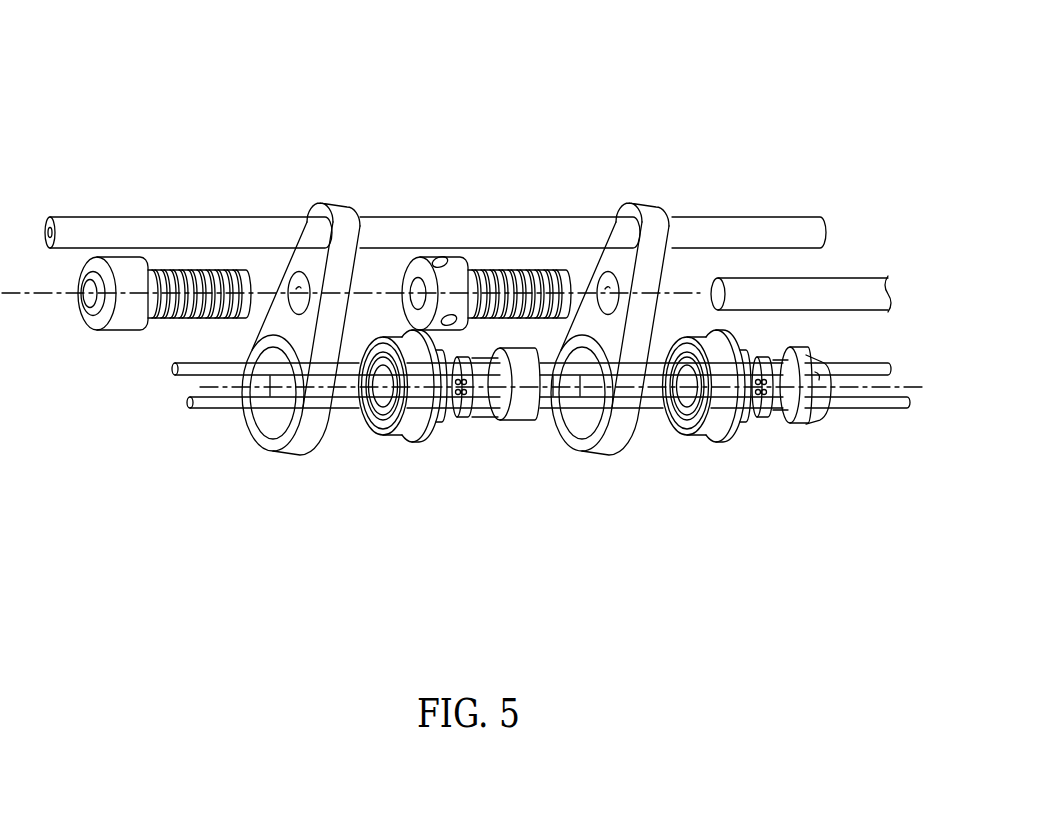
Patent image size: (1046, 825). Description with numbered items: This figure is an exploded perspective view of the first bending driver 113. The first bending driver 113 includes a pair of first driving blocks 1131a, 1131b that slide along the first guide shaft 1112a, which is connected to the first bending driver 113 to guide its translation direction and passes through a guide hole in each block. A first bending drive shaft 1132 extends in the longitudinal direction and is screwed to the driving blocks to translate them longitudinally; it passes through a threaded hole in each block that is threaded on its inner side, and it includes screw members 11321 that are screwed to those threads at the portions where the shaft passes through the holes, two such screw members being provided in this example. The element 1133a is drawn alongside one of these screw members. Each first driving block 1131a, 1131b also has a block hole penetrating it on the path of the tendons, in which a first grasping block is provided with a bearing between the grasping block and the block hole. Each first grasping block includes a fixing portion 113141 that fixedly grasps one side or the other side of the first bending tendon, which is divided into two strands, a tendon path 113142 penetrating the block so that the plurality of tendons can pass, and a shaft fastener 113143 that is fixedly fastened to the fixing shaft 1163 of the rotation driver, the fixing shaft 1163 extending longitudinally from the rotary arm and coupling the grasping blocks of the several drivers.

The first bending driver 113 is at (800, 45).
The first guide shaft 1112a is at (768, 226).
The fastening screw 1133a is at (130, 272).
The screw member 11321 is at (455, 272).
The first bending drive shaft 1132 is at (853, 290).
The fixing shaft 1163 is at (176, 372).
The first driving block 1131a is at (317, 307).
The first driving block 1131b is at (624, 307).
The fixing portion 113141 is at (818, 378).
The tendon path 113142 is at (457, 393).
The shaft fastener 113143 is at (499, 420).